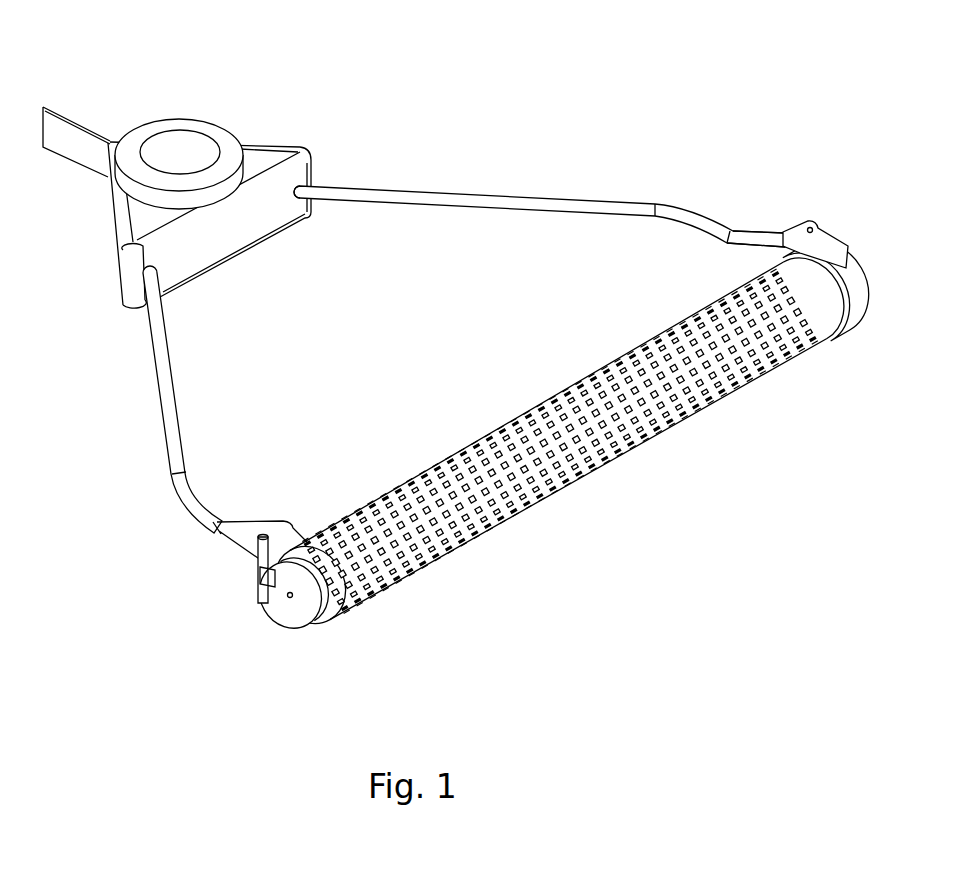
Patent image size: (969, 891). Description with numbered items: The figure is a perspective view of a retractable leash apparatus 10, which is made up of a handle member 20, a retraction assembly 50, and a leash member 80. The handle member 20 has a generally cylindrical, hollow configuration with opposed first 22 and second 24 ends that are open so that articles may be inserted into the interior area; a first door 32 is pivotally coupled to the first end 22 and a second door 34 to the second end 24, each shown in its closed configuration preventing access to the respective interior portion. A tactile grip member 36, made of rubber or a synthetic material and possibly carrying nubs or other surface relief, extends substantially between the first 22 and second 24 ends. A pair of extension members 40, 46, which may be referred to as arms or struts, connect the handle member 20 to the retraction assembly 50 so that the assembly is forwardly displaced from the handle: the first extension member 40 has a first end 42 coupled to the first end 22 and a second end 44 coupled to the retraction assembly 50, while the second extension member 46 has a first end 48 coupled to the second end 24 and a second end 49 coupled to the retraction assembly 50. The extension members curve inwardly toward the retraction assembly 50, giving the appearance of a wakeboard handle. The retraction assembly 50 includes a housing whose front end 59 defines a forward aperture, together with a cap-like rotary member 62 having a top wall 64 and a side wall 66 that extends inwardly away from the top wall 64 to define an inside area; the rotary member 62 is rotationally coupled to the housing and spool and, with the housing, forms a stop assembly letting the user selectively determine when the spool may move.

The retractable leash apparatus 10 is at (556, 84).
The handle member 20 is at (588, 464).
The first end 22 is at (328, 613).
The second end 24 is at (855, 317).
The first door 32 is at (297, 617).
The second door 34 is at (845, 247).
The tactile grip member 36 is at (483, 533).
The first extension member 40 is at (157, 387).
The first end of first extension member 42 is at (217, 535).
The second end of first extension member 44 is at (120, 287).
The second extension member 46 is at (542, 182).
The first end of second extension member 48 is at (740, 228).
The second end of second extension member 49 is at (308, 190).
The retraction assembly 50 is at (203, 165).
The front end of housing 59 is at (110, 140).
The rotary member 62 is at (144, 133).
The top wall 64 is at (182, 133).
The side wall 66 is at (128, 187).
The leash member 80 is at (58, 120).